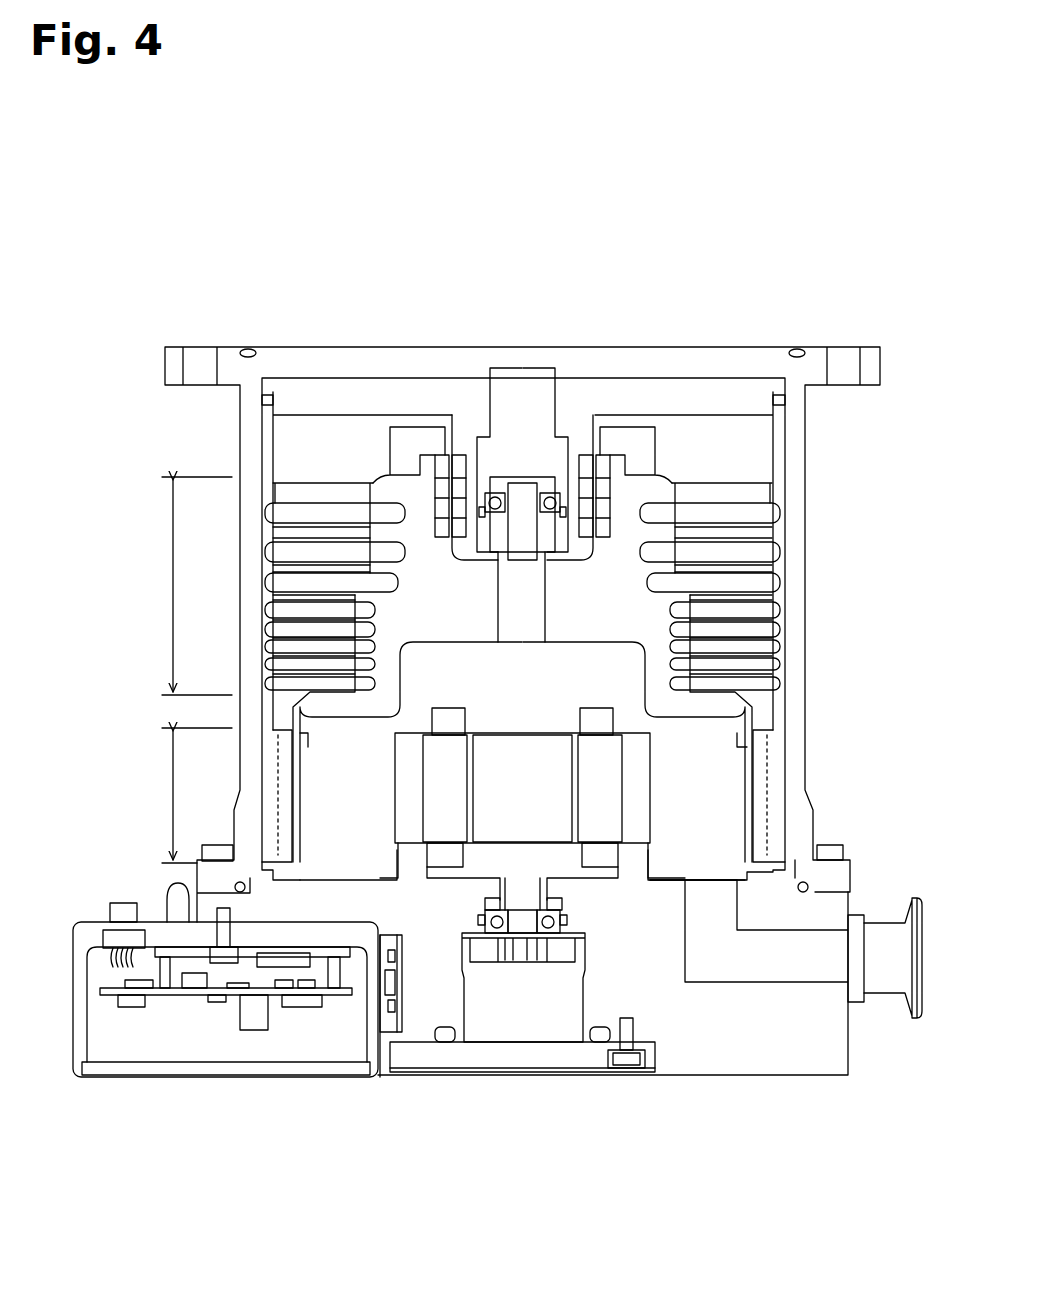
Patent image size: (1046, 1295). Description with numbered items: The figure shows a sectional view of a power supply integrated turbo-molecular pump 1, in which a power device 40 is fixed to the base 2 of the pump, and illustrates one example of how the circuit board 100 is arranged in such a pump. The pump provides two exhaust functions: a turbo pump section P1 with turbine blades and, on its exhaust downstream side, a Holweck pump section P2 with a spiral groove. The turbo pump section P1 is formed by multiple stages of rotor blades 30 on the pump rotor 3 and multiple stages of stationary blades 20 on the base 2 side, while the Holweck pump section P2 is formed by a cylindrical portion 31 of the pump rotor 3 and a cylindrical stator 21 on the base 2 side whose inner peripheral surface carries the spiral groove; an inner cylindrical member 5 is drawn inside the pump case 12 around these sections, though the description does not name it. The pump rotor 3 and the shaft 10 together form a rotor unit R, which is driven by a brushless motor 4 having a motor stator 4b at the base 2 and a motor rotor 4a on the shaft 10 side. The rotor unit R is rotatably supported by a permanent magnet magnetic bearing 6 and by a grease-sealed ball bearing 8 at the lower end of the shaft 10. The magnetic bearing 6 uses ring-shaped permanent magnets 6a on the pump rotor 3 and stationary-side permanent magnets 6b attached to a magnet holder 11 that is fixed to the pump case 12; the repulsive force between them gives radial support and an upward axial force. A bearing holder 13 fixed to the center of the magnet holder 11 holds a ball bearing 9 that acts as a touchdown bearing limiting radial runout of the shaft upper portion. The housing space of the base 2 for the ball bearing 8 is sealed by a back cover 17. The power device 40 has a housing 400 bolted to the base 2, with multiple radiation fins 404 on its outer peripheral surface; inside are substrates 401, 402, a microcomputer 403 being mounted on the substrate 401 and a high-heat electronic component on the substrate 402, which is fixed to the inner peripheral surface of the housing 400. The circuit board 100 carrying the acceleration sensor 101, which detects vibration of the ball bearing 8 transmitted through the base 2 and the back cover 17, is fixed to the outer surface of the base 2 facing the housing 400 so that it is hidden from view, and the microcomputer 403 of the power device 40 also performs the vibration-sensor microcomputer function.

The turbo-molecular pump 1 is at (460, 1228).
The base 2 is at (725, 1033).
The pump rotor 3 is at (621, 547).
The motor 4 is at (498, 809).
The motor rotor 4a is at (444, 780).
The motor stator 4b is at (502, 807).
The pump casing inner cylinder 5 is at (790, 570).
The permanent magnet magnetic bearing 6 is at (504, 391).
The permanent magnets 6a is at (438, 458).
The permanent magnets 6b is at (462, 458).
The ball bearing 8 is at (548, 928).
The ball bearing 9 is at (498, 497).
The shaft 10 is at (554, 672).
The magnet holder 11 is at (613, 390).
The pump case 12 is at (803, 632).
The bearing holder 13 is at (541, 378).
The back cover 17 is at (523, 1060).
The stationary blades 20 is at (752, 513).
The stator 21 is at (762, 750).
The rotor blades 30 is at (748, 491).
The cylindrical portion 31 is at (745, 805).
The power device 40 is at (191, 983).
The circuit board 100 is at (407, 1033).
The acceleration sensor 101 is at (393, 993).
The housing 400 is at (178, 1021).
The substrate 401 is at (175, 997).
The substrate 402 is at (255, 953).
The microcomputer 403 is at (298, 1000).
The radiation fins 404 is at (177, 902).
The rotor unit R is at (378, 472).
The turbo pump section P1 is at (183, 586).
The Holweck pump section P2 is at (183, 795).